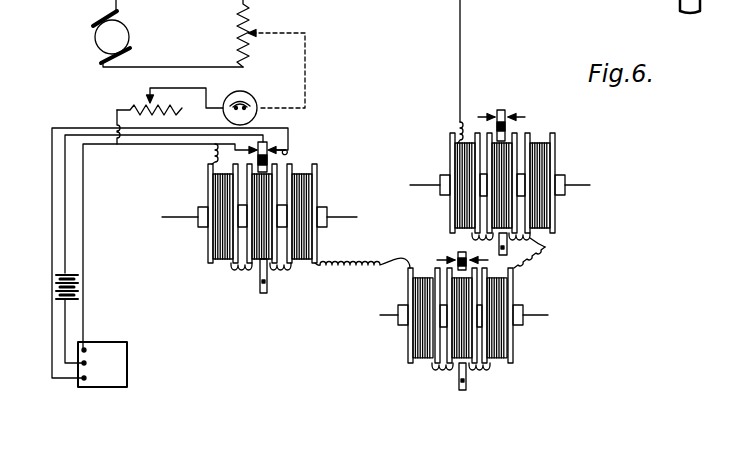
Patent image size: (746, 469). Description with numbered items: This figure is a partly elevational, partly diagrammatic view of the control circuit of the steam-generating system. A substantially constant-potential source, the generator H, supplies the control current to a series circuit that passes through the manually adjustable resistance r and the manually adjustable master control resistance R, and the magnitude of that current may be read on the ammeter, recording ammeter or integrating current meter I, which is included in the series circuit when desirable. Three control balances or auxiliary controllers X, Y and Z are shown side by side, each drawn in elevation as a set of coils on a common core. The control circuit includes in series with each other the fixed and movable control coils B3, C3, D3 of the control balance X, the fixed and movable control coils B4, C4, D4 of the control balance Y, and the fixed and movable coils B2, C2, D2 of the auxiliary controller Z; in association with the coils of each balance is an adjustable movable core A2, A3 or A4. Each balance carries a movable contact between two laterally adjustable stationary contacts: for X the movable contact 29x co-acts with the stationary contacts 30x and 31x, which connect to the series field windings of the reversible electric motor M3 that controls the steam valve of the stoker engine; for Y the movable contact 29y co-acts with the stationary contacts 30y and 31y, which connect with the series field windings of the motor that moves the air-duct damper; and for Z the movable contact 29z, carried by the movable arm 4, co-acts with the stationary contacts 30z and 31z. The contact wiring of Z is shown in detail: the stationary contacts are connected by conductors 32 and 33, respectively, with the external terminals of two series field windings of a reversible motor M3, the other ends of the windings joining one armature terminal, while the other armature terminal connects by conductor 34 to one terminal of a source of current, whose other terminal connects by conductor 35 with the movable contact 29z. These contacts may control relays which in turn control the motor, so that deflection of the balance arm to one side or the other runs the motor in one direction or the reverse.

The generator H is at (105, 38).
The master control resistance R is at (226, 33).
The manually adjustable resistance r is at (147, 101).
The ammeter I is at (255, 102).
The conductor 33 is at (52, 238).
The conductor 35 is at (66, 199).
The conductor 32 is at (85, 242).
The conductor 34 is at (66, 312).
The reversible electric motor M3 is at (116, 373).
The control balance Z is at (294, 217).
The movable core A2 is at (200, 224).
The control coil C2 is at (220, 242).
The control coil B2 is at (283, 273).
The control coil D2 is at (300, 192).
The stationary contact 31z is at (265, 141).
The movable contact 29z is at (290, 153).
The stationary contact 30z is at (212, 149).
The control balance X is at (534, 134).
The movable core A3 is at (562, 177).
The control coil C3 is at (458, 160).
The control coil B3 is at (505, 152).
The control coil D3 is at (545, 154).
The stationary contact 31x is at (514, 118).
The movable contact 29x is at (503, 110).
The stationary contact 30x is at (483, 115).
The control balance Y is at (479, 328).
The movable core A4 is at (524, 312).
The control coil C4 is at (420, 340).
The control coil B4 is at (455, 372).
The control coil D4 is at (500, 291).
The stationary contact 31y is at (485, 256).
The movable contact 29y is at (461, 252).
The stationary contact 30y is at (445, 259).
The movable arm 4 is at (262, 283).